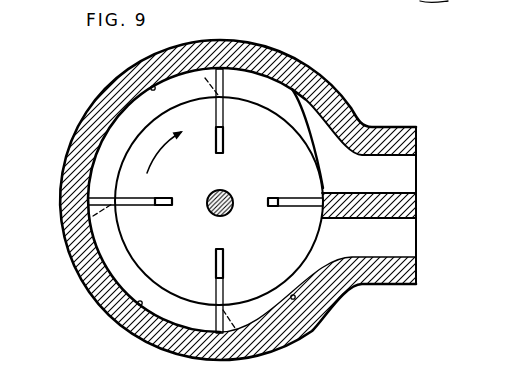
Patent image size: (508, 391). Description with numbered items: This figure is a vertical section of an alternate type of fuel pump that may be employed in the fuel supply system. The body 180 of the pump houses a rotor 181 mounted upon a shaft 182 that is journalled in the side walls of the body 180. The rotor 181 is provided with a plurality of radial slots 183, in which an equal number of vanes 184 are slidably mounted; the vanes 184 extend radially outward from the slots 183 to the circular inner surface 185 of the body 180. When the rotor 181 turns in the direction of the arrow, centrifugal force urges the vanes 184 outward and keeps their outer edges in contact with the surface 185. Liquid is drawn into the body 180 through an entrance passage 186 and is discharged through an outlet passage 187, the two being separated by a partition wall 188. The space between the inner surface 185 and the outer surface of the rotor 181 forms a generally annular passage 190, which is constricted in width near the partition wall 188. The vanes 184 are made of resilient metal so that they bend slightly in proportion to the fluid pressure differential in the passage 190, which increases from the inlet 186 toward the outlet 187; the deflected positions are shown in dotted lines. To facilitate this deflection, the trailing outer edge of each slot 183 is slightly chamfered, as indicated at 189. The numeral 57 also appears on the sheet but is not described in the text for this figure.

The conduit 57 is at (420, 1).
The body 180 is at (307, 80).
The rotor 181 is at (137, 153).
The shaft 182 is at (222, 192).
The radial slots 183 is at (224, 145).
The vanes 184 is at (224, 121).
The circular inner surface 185 is at (152, 87).
The entrance passage 186 is at (393, 245).
The outlet passage 187 is at (392, 183).
The partition wall 188 is at (395, 202).
The chamfer 189 is at (322, 188).
The annular passage 190 is at (131, 116).